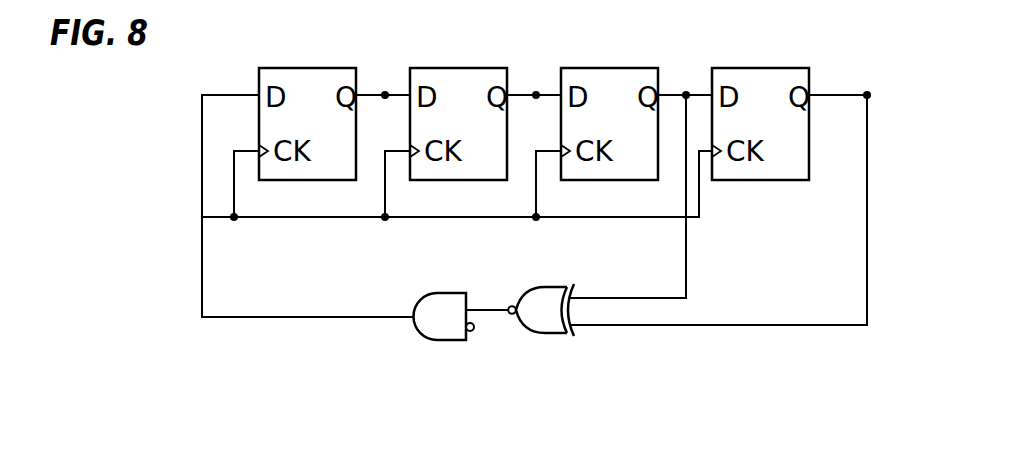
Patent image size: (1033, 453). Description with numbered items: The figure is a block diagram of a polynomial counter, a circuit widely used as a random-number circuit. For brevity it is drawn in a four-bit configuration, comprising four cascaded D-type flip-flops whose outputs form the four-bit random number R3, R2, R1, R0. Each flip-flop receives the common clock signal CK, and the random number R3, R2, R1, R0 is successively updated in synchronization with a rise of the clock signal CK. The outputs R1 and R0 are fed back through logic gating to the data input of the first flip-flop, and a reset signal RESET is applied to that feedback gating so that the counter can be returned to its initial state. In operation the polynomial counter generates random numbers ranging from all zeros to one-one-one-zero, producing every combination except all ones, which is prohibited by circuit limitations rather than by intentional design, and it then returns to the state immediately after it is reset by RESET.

The element R3 is at (385, 95).
The element R2 is at (536, 95).
The element R1 is at (686, 95).
The element R0 is at (867, 95).
The clock signal CK is at (202, 217).
The reset signal RESET is at (474, 327).